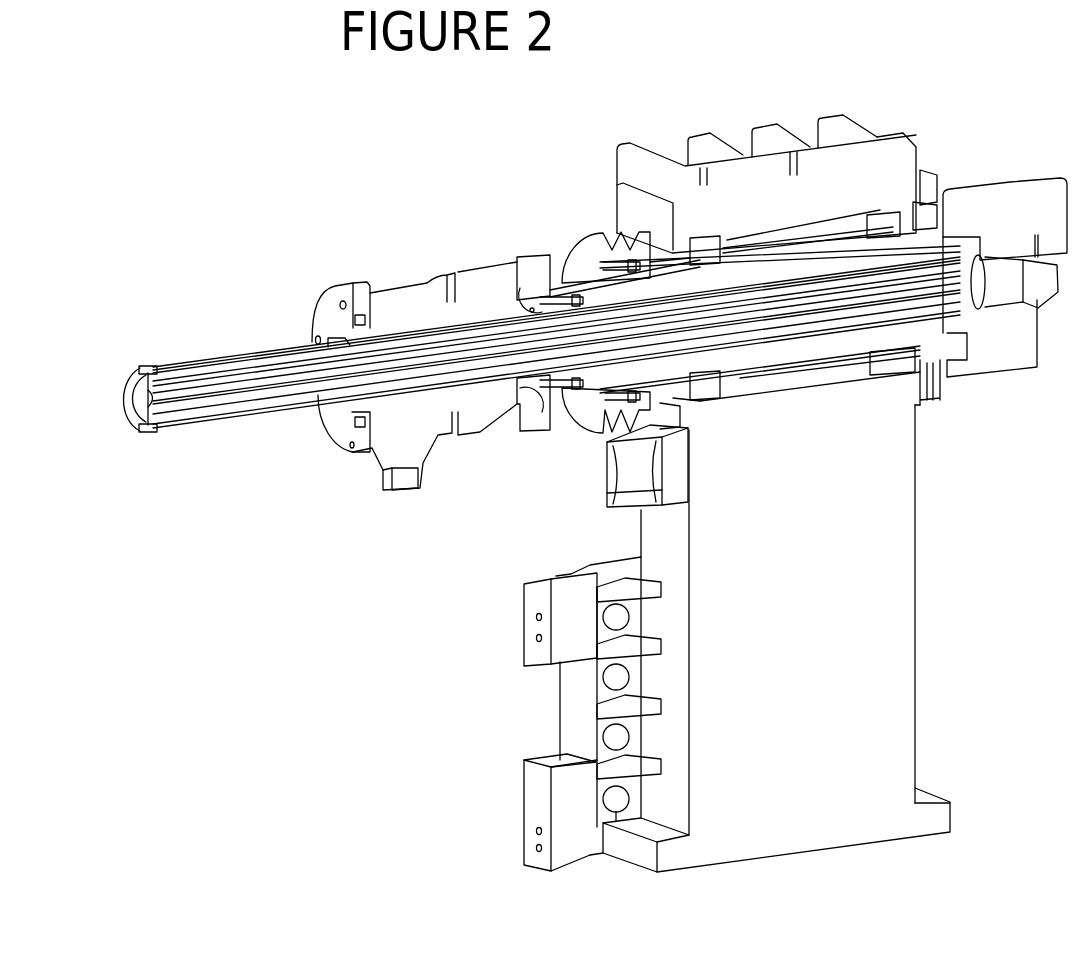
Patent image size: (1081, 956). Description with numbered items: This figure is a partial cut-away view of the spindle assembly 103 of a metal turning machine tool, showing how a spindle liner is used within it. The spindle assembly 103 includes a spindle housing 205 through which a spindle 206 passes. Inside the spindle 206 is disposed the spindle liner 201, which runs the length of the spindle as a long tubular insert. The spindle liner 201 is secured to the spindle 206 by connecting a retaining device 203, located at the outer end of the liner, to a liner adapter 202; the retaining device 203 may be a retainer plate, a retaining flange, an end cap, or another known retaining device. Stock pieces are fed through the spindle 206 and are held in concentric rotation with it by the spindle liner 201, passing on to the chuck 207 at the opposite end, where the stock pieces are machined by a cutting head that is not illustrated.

The spindle assembly 103 is at (104, 176).
The spindle liner 201 is at (237, 399).
The liner adapter 202 is at (240, 345).
The retaining device 203 is at (128, 430).
The spindle housing 205 is at (763, 193).
The spindle 206 is at (828, 345).
The chuck 207 is at (998, 222).